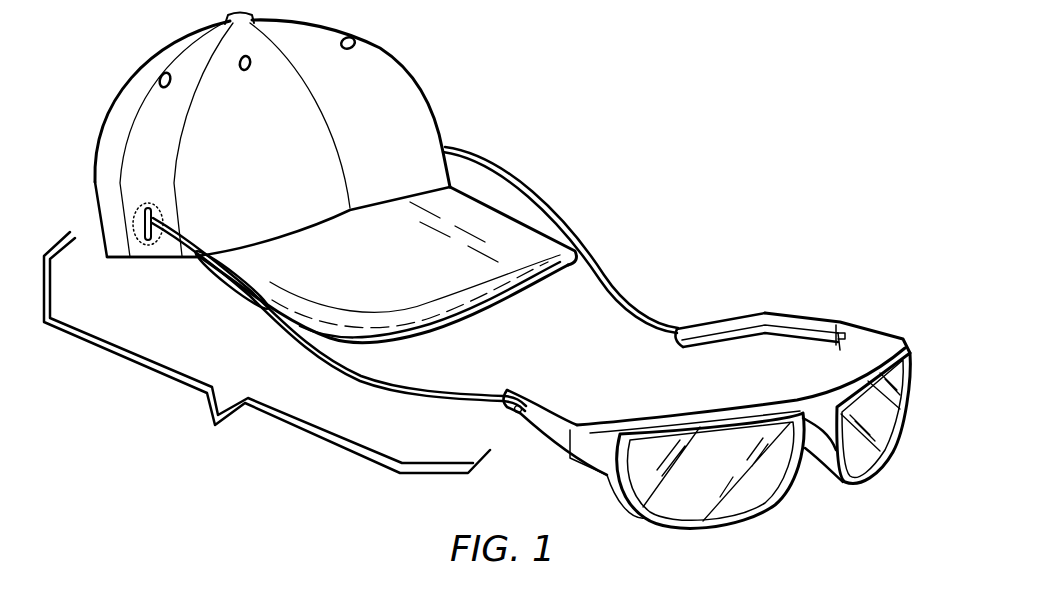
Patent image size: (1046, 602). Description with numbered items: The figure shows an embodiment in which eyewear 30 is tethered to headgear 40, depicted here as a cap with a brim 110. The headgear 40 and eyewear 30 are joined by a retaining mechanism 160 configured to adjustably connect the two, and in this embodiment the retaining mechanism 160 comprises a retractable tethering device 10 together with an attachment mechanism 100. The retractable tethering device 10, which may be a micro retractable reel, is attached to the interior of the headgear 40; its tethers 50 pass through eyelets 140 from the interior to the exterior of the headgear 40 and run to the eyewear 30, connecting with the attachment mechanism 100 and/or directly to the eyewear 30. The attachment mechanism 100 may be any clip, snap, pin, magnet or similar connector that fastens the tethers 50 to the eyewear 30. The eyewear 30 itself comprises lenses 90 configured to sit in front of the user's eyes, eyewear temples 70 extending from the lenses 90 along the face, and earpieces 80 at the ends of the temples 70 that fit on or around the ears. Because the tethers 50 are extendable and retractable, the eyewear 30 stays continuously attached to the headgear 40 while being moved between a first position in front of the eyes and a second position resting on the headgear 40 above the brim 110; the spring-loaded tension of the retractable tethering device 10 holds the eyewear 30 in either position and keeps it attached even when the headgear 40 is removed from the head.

The retractable tethering device 10 is at (147, 261).
The eyewear 30 is at (678, 553).
The headgear 40 is at (145, 63).
The tethers 50 is at (545, 190).
The eyewear temples 70 is at (858, 326).
The earpieces 80 is at (700, 347).
The lenses 90 is at (895, 488).
The attachment mechanism 100 is at (525, 399).
The brim 110 is at (508, 283).
The eyelets 140 is at (140, 216).
The retaining mechanism 160 is at (267, 352).